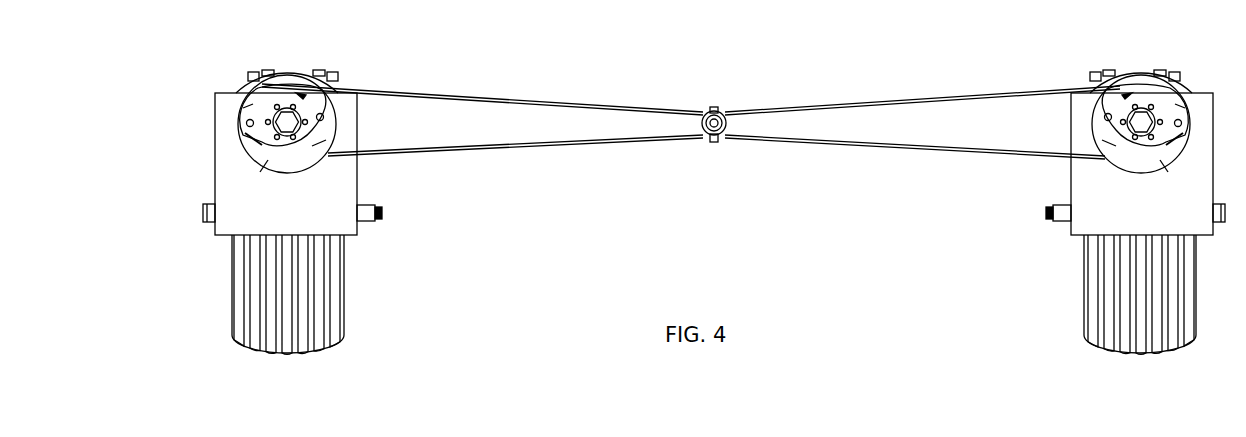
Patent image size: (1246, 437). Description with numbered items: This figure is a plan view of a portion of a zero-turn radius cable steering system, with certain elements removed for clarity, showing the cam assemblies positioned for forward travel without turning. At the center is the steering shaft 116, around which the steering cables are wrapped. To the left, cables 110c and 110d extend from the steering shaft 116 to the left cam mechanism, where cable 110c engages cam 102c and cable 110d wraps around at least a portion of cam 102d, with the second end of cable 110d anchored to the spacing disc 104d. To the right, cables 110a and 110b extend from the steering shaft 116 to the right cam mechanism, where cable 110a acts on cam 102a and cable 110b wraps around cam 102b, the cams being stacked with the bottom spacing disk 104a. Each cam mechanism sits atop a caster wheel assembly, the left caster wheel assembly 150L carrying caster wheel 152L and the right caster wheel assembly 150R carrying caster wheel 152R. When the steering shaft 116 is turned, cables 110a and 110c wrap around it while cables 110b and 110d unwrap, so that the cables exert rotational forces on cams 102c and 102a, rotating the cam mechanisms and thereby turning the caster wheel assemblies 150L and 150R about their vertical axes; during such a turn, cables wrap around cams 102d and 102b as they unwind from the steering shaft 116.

The cam 102a is at (1105, 133).
The cam 102b is at (1177, 108).
The cam 102c is at (248, 111).
The cam 102d is at (322, 133).
The bottom spacing disk 104a is at (1129, 129).
The spacing disc 104d is at (291, 142).
The cable 110a is at (918, 148).
The cable 110b is at (943, 94).
The cable 110c is at (488, 94).
The cable 110d is at (513, 148).
The steering shaft 116 is at (716, 108).
The caster wheel assembly 150L is at (318, 193).
The caster wheel assembly 150R is at (1108, 186).
The caster wheel 152L is at (315, 351).
The caster wheel 152R is at (1112, 350).